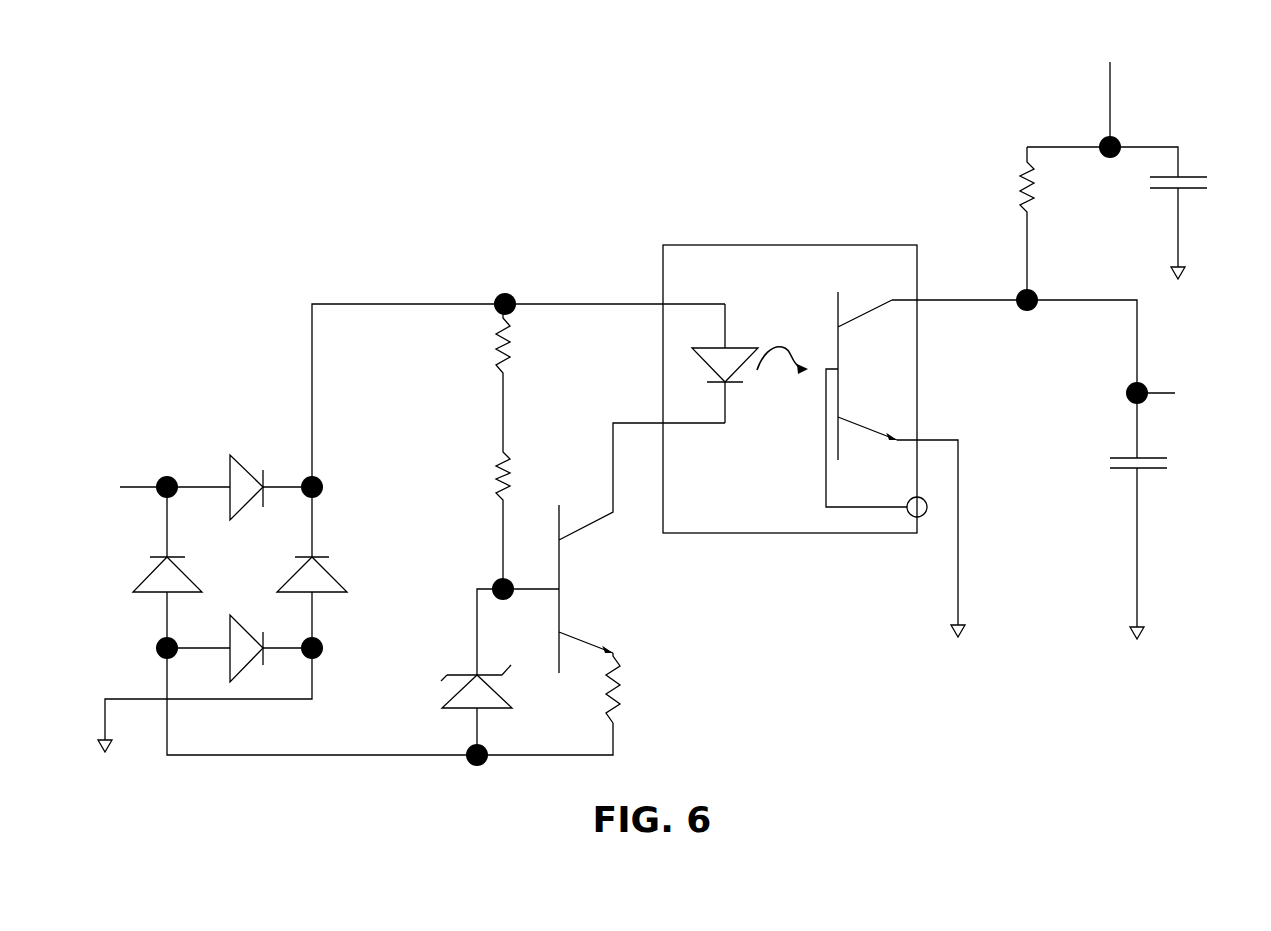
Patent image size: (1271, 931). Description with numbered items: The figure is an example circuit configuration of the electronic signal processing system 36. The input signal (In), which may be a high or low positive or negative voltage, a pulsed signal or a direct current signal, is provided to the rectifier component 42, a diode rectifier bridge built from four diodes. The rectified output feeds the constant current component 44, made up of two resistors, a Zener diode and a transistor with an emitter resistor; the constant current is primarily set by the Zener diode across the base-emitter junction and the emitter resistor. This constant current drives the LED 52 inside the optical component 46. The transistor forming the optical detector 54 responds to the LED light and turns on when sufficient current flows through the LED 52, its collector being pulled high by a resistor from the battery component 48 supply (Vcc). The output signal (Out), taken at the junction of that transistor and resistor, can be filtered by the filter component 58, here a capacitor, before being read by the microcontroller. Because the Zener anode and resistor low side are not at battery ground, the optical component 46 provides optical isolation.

The electronic signal processing system 36 is at (302, 89).
The rectifier component 42 is at (160, 476).
The constant current component 44 is at (507, 295).
The optical component 46 is at (695, 245).
The battery component 48 is at (1098, 62).
The LED 52 is at (737, 348).
The optical detector 54 is at (838, 292).
The filter component 58 is at (1157, 457).